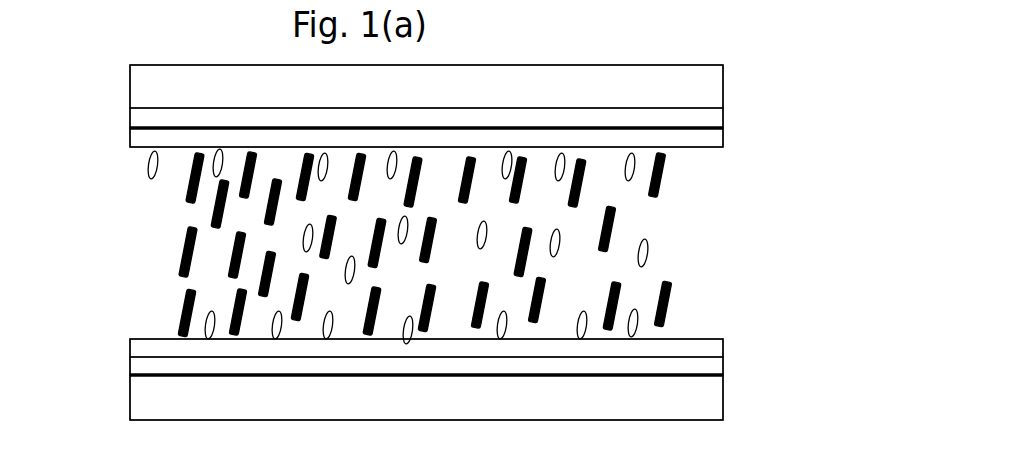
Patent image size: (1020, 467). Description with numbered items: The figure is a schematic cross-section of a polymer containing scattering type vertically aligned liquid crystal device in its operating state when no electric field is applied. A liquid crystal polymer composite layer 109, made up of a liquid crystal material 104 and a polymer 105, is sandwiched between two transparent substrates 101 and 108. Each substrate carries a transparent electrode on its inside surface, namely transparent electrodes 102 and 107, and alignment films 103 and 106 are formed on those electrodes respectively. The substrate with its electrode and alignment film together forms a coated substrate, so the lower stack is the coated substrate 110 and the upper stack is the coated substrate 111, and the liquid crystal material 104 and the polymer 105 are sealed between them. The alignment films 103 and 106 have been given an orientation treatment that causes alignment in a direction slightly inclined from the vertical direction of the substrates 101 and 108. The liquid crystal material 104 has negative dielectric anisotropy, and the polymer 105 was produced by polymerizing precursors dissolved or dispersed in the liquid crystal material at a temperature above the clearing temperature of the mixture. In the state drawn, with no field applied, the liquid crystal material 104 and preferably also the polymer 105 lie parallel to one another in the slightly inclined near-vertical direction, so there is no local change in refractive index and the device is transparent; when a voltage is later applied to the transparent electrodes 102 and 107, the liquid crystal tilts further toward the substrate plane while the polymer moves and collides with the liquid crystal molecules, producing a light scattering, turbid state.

The transparent substrate 101 is at (724, 393).
The transparent electrode 102 is at (724, 362).
The alignment film 103 is at (724, 347).
The liquid crystal material 104 is at (677, 292).
The polymer 105 is at (648, 247).
The alignment film 106 is at (724, 138).
The transparent electrode 107 is at (724, 115).
The transparent substrate 108 is at (724, 85).
The liquid crystal polymer composite layer 109 is at (128, 147).
The coated substrate 110 is at (128, 338).
The coated substrate 111 is at (128, 65).